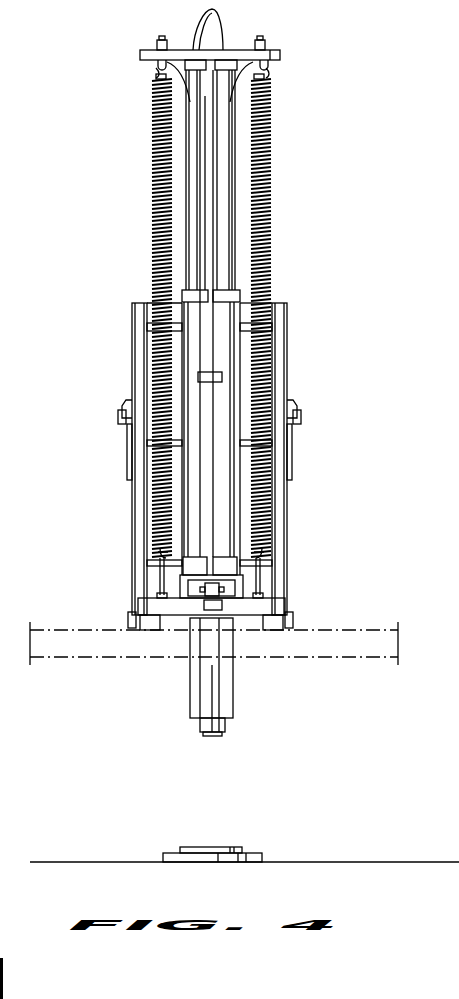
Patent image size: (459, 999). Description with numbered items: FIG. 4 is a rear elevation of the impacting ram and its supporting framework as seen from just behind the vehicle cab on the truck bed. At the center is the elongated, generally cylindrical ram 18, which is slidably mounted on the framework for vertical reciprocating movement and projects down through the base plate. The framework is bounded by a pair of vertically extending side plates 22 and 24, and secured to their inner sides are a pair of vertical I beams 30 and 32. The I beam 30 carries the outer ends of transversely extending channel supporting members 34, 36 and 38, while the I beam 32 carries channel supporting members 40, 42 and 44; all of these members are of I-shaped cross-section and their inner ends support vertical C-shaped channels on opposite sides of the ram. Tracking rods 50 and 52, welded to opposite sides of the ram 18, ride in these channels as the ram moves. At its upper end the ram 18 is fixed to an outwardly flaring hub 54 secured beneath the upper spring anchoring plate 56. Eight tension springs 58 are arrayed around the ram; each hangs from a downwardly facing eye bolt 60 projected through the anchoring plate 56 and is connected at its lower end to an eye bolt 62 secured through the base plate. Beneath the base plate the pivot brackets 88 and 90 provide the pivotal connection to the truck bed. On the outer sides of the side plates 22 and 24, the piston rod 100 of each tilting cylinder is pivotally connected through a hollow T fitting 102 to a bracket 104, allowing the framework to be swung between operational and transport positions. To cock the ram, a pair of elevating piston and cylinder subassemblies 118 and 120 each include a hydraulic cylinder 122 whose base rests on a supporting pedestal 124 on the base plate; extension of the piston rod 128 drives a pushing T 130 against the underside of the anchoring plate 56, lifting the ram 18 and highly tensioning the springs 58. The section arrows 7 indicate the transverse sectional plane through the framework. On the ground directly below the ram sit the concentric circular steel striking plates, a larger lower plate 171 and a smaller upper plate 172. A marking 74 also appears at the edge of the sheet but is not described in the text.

The section line 7- 7 is at (243, 24).
The ram 18 is at (210, 125).
The side plate 22 is at (287, 340).
The side plate 24 is at (135, 336).
The I beam 30 is at (273, 500).
The I beam 32 is at (150, 495).
The channel supporting member 34 is at (250, 558).
The channel supporting member 36 is at (243, 442).
The channel supporting member 38 is at (243, 330).
The channel supporting member 40 is at (165, 556).
The channel supporting member 42 is at (180, 442).
The channel supporting member 44 is at (178, 326).
The tracking rod 50 is at (192, 675).
The tracking rod 52 is at (228, 696).
The hub 54 is at (185, 77).
The upper spring anchoring plate 56 is at (140, 52).
The tension spring 58 is at (152, 138).
The eye bolt 60 is at (268, 46).
The eye bolt 62 is at (160, 581).
The stray numeral 74 is at (20, 978).
The pivot bracket 88 is at (286, 613).
The pivot bracket 90 is at (130, 618).
The piston rod 100 is at (130, 462).
The hollow T fitting 102 is at (124, 417).
The bracket 104 is at (130, 405).
The elevating piston and cylinder subassembly 118 is at (240, 182).
The elevating piston and cylinder subassembly 120 is at (178, 165).
The hydraulic cylinder 122 is at (225, 300).
The supporting pedestal 124 is at (183, 590).
The piston rod 128 is at (230, 62).
The pushing T 130 is at (190, 62).
The lower plate 171 is at (188, 858).
The upper plate 172 is at (224, 850).